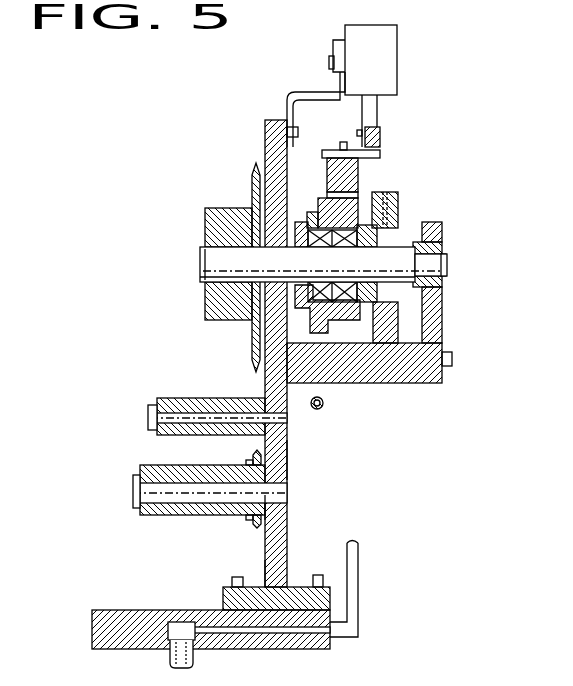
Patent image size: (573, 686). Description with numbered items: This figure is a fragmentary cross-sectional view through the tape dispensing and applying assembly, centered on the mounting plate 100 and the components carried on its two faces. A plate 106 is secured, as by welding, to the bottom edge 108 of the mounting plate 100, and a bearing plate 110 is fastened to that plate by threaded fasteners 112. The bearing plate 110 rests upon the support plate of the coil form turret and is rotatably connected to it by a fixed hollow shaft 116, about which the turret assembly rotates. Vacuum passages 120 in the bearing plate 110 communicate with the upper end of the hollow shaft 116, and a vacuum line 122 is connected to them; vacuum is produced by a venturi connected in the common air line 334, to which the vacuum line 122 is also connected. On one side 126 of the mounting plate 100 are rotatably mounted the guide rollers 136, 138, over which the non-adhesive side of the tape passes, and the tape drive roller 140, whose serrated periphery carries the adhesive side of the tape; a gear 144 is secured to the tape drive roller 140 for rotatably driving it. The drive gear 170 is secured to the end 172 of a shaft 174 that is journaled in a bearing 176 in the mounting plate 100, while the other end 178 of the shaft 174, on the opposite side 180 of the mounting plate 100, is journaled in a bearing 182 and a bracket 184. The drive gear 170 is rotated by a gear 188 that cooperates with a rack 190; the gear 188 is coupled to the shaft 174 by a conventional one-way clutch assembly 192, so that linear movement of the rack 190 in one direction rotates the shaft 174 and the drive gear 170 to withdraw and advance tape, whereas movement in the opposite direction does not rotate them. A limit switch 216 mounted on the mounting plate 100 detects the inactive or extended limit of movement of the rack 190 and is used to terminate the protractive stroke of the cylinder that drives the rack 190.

The mounting plate 100 is at (288, 510).
The plate 106 is at (224, 601).
The bottom edge 108 is at (281, 576).
The bearing plate 110 is at (92, 620).
The threaded fasteners 112 is at (233, 578).
The fixed hollow shaft 116 is at (170, 658).
The vacuum passages 120 is at (273, 628).
The vacuum line 122 is at (359, 556).
The side 126 is at (265, 128).
The guide roller 136 is at (4, 352).
The guide roller 138 is at (185, 398).
The tape drive roller 140 is at (155, 465).
The gear 144 is at (255, 522).
The drive gear 170 is at (252, 175).
The end 172 is at (200, 264).
The shaft 174 is at (297, 274).
The bearing 176 is at (263, 322).
The other end 178 is at (410, 266).
The opposite side 180 is at (288, 462).
The bearing 182 is at (447, 271).
The bracket 184 is at (412, 380).
The gear 188 is at (358, 192).
The rack 190 is at (358, 172).
The one-way clutch assembly 192 is at (410, 203).
The limit switch 216 is at (388, 30).
The common air line 334 is at (325, 403).